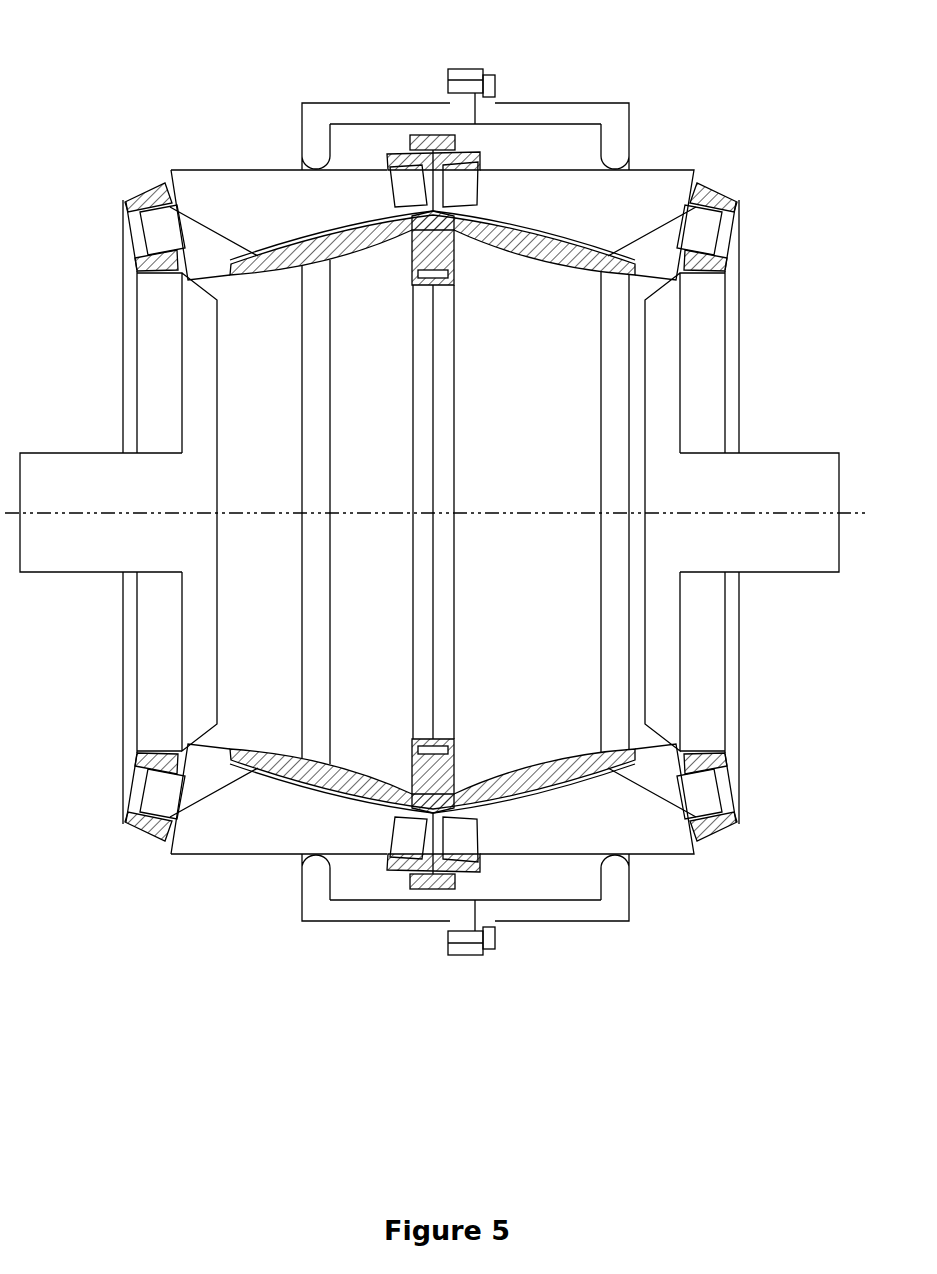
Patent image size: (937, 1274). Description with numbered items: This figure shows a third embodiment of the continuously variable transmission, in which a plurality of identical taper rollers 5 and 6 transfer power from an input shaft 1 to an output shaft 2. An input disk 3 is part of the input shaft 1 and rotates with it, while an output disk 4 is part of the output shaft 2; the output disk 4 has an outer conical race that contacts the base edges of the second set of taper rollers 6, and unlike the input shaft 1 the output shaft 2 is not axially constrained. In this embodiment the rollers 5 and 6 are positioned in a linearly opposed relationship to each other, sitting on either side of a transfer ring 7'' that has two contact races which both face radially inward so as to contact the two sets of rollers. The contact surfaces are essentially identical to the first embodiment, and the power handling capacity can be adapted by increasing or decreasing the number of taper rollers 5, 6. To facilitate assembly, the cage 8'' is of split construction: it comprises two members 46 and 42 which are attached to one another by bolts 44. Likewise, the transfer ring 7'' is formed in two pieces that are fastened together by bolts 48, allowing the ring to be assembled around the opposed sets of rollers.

The input shaft 1 is at (102, 533).
The output shaft 2 is at (757, 532).
The input disk 3 is at (197, 340).
The output disk 4 is at (663, 358).
The taper rollers 5 is at (228, 835).
The taper rollers 6 is at (643, 835).
The transfer ring 7'' is at (437, 463).
The cage 8'' is at (441, 409).
The cage member 42 is at (683, 252).
The bolts 44 is at (410, 146).
The cage member 46 is at (170, 207).
The bolts 48 is at (498, 80).